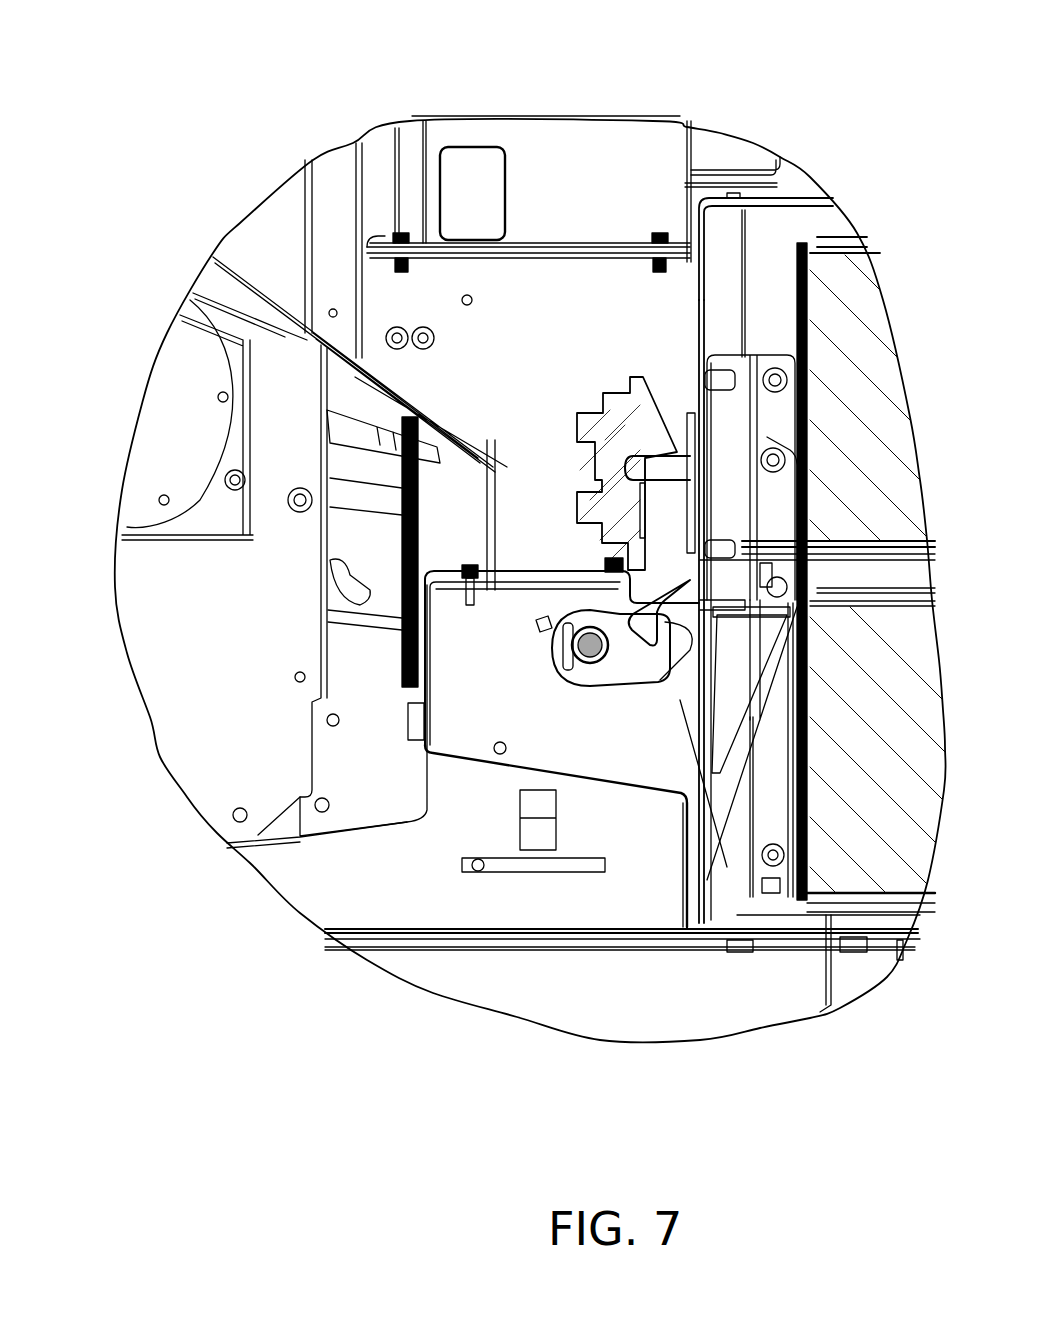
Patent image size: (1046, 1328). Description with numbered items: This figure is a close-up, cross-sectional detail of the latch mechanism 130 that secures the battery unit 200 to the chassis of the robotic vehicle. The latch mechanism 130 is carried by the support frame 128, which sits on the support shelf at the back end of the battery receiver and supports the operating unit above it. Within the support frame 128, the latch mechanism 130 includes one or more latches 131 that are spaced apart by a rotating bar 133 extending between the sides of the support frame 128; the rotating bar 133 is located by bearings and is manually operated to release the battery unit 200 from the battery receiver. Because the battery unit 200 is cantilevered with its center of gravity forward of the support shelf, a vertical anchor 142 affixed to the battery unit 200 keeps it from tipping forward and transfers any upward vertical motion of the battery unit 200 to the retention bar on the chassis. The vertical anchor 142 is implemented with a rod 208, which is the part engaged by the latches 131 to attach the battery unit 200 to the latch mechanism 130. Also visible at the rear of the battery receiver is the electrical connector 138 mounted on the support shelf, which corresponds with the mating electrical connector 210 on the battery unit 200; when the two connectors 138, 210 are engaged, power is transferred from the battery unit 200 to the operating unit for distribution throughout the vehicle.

The support frame 128 is at (487, 640).
The latch mechanism 130 is at (600, 668).
The latch 131 is at (630, 660).
The rotating bar 133 is at (573, 647).
The electrical connector 138 is at (617, 433).
The vertical anchor 142 is at (655, 600).
The battery unit 200 is at (770, 270).
The rod 208 is at (650, 650).
The mating electrical connector 210 is at (683, 460).